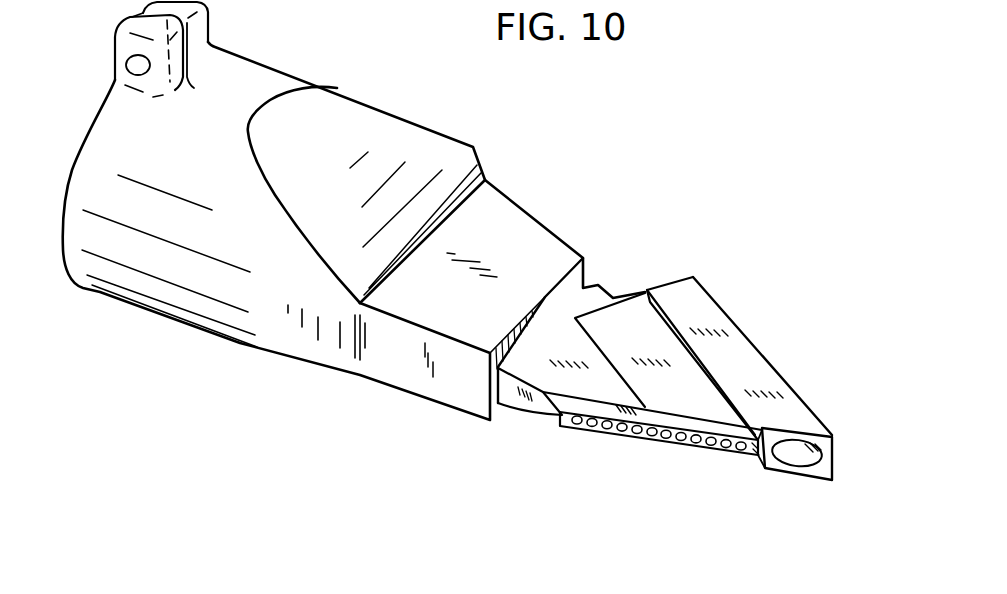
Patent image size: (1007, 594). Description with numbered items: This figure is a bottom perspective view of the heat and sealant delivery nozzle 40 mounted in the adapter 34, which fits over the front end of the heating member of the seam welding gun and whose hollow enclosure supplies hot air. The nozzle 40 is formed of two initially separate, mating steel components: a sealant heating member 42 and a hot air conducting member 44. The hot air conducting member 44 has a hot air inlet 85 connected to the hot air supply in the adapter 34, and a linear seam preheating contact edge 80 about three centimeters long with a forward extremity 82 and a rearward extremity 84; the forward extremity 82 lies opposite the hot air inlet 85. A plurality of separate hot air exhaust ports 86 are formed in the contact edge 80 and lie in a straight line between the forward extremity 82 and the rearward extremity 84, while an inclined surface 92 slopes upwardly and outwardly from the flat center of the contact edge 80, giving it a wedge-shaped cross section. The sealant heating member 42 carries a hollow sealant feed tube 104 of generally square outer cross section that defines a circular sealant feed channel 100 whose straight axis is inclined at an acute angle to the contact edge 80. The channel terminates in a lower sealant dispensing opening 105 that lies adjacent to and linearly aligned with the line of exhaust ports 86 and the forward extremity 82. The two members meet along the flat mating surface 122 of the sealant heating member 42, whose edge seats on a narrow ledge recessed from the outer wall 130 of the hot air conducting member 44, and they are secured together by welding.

The adapter 34 is at (406, 104).
The nozzle 40 is at (724, 258).
The sealant heating member 42 is at (652, 262).
The hot air conducting member 44 is at (578, 448).
The seam preheating contact edge 80 is at (614, 432).
The forward extremity 82 is at (755, 450).
The rearward extremity 84 is at (560, 425).
The hot air inlet 85 is at (560, 303).
The hot air exhaust ports 86 is at (661, 437).
The inclined surface 92 is at (590, 405).
The sealant feed channel 100 is at (785, 458).
The sealant feed tube 104 is at (757, 372).
The sealant dispensing opening 105 is at (815, 463).
The flat mating surface 122 is at (647, 330).
The outer wall 130 is at (552, 325).